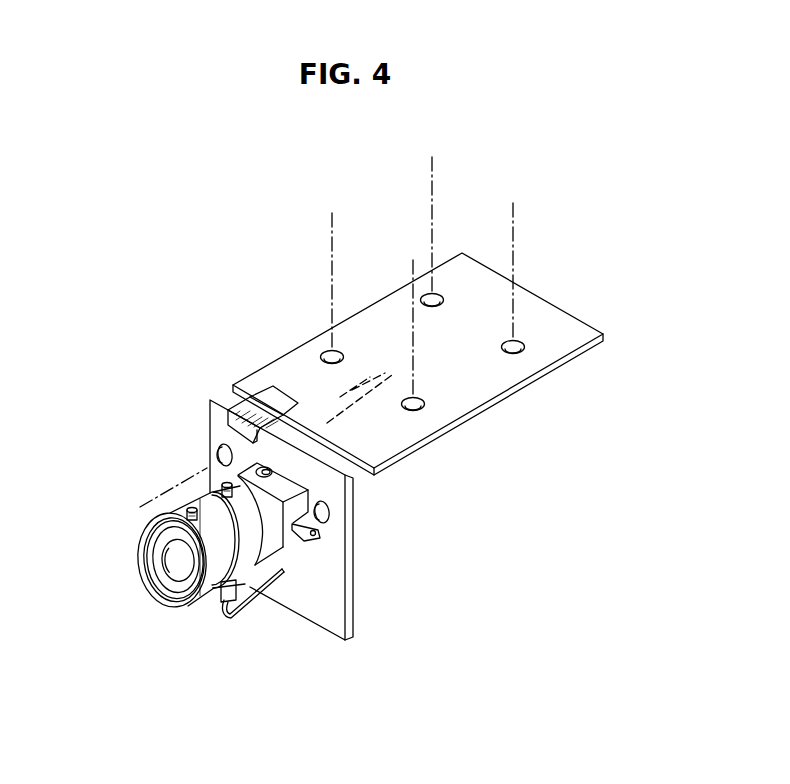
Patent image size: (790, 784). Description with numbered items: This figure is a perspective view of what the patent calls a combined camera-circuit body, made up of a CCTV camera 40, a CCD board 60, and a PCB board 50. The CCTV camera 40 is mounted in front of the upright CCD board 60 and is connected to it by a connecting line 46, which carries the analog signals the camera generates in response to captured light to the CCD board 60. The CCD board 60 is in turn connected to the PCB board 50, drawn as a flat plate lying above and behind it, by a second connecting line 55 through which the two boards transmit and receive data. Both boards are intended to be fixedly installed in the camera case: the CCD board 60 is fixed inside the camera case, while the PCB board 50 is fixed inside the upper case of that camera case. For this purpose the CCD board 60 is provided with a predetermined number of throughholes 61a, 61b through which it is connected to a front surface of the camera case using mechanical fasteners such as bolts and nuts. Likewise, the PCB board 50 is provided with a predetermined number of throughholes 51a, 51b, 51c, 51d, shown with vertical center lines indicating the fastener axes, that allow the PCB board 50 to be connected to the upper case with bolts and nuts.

The CCTV camera 40 is at (150, 564).
The connecting line 46 is at (232, 612).
The PCB board 50 is at (553, 318).
The throughhole 51a is at (417, 410).
The throughhole 51b is at (522, 352).
The throughhole 51c is at (427, 297).
The throughhole 51d is at (323, 353).
The connecting line 55 is at (233, 407).
The CCD board 60 is at (338, 588).
The throughhole 61a is at (332, 512).
The throughhole 61b is at (220, 450).